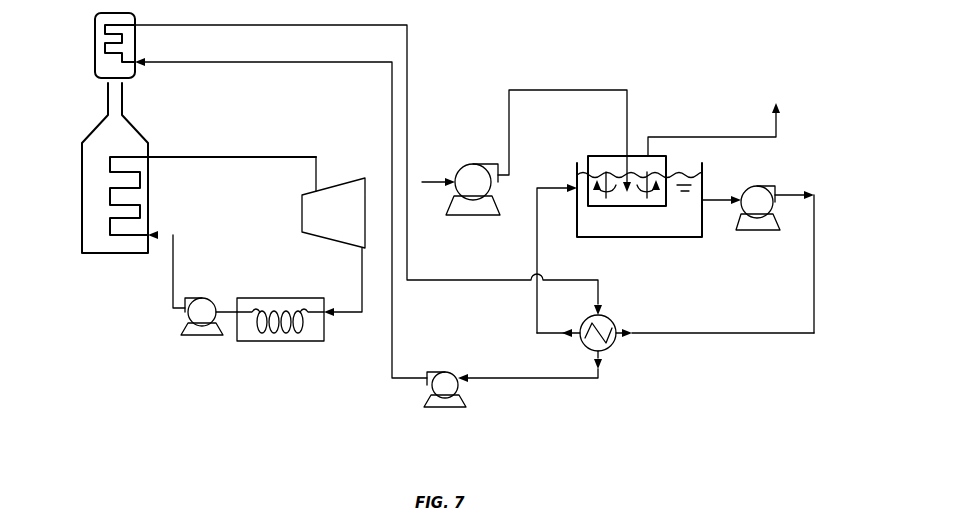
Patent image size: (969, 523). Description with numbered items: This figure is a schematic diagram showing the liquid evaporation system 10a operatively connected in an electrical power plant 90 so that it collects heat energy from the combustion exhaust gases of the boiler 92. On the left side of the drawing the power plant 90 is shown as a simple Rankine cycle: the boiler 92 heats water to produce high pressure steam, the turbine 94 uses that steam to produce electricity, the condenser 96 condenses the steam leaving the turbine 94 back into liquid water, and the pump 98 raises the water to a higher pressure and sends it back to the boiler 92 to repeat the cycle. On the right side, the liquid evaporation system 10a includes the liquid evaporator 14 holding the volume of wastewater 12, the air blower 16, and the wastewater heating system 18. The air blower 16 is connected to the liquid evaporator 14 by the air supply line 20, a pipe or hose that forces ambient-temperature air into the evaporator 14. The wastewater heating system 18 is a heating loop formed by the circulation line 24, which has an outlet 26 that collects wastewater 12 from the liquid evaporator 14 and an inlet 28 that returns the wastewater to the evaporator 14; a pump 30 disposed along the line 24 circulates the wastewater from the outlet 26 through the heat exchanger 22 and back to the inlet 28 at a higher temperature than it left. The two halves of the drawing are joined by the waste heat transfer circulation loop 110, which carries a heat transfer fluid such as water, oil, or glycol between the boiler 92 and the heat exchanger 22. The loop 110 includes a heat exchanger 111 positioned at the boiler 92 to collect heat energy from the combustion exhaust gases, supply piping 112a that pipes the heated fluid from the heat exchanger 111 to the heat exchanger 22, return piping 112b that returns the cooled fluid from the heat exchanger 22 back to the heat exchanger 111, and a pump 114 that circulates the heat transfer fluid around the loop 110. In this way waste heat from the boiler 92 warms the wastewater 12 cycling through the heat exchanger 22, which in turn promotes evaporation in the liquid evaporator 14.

The liquid evaporation system 10a is at (726, 58).
The wastewater 12 is at (667, 232).
The liquid evaporator 14 is at (666, 162).
The air blower 16 is at (470, 164).
The wastewater heating system 18 is at (824, 284).
The air supply line 20 is at (540, 88).
The heat exchanger 22 is at (611, 348).
The circulation line 24 is at (767, 335).
The outlet 26 is at (703, 197).
The inlet 28 is at (574, 186).
The pump 30 is at (772, 185).
The electrical power plant 90 is at (124, 326).
The boiler 92 is at (82, 200).
The turbine 94 is at (351, 178).
The condenser 96 is at (258, 298).
The pump 98 is at (193, 298).
The waste heat transfer circulation loop 110 is at (535, 400).
The heat exchanger 111 is at (97, 42).
The supply piping 112a is at (478, 282).
The return piping 112b is at (506, 376).
The pump 114 is at (428, 398).